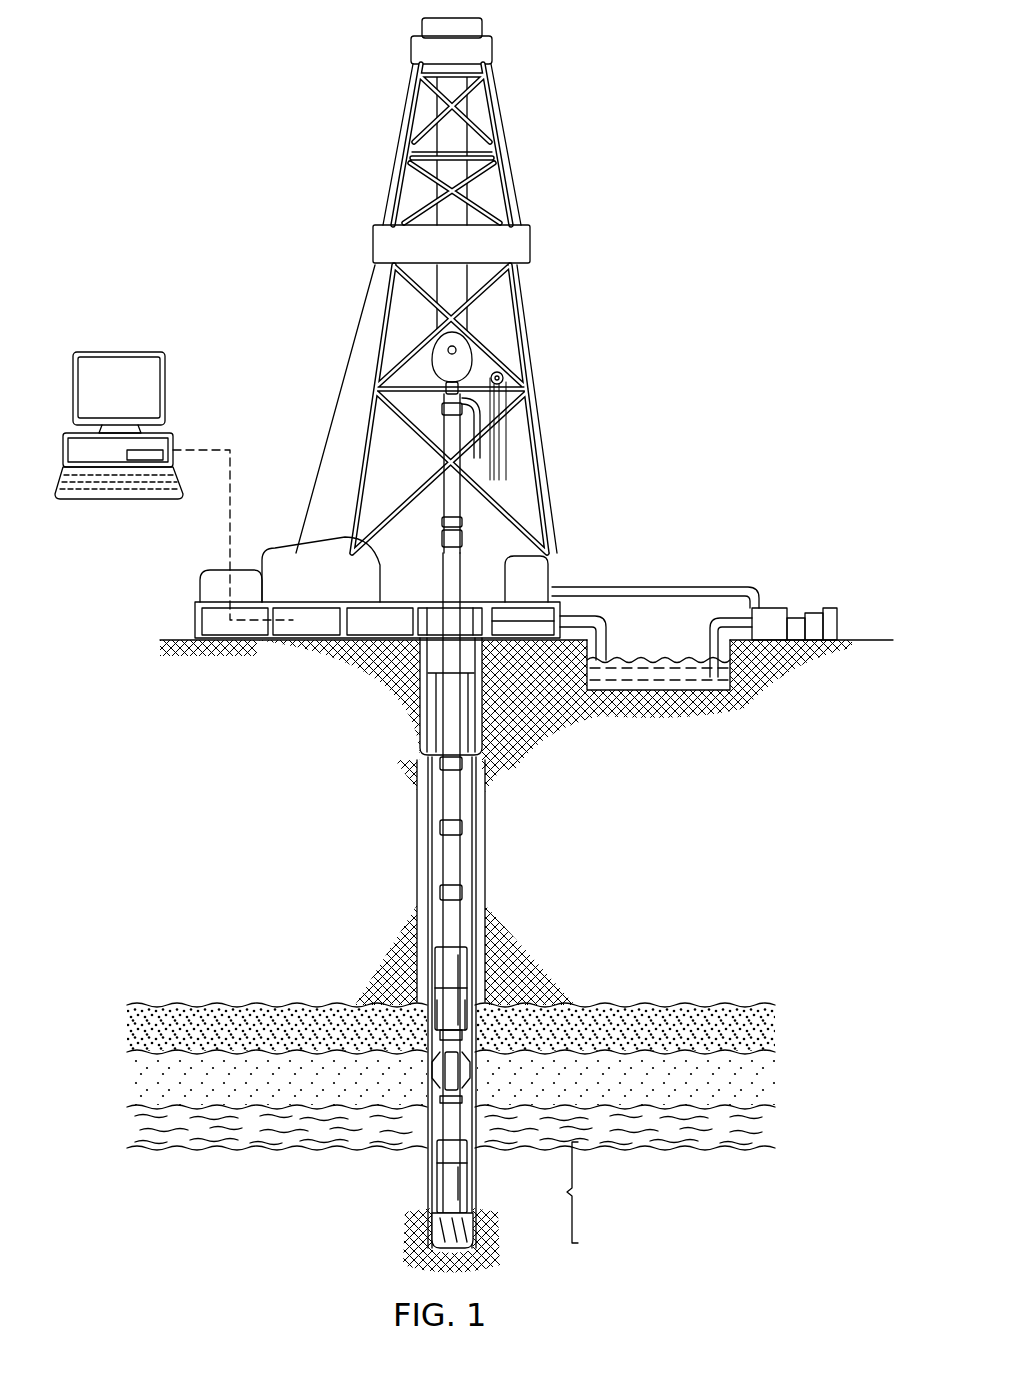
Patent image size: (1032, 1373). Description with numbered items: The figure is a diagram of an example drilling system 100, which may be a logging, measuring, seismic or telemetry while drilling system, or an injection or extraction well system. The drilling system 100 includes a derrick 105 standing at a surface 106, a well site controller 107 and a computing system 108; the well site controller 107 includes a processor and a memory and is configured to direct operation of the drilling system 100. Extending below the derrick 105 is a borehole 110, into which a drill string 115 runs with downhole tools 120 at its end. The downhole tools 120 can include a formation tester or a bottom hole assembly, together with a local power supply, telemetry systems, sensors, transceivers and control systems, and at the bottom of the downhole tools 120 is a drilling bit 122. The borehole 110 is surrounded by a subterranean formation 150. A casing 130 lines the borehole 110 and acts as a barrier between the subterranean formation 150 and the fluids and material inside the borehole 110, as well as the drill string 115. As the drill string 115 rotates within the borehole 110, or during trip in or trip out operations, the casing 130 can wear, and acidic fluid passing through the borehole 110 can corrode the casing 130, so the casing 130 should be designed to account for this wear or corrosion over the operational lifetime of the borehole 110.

The drilling system 100 is at (232, 122).
The derrick 105 is at (527, 322).
The surface 106 is at (856, 640).
The well site controller 107 is at (317, 626).
The computing system 108 is at (118, 350).
The borehole 110 is at (437, 818).
The drill string 115 is at (460, 863).
The downhole tools 120 is at (528, 1095).
The drilling bit 122 is at (427, 1227).
The casing 130 is at (477, 822).
The subterranean formation 150 is at (796, 1091).